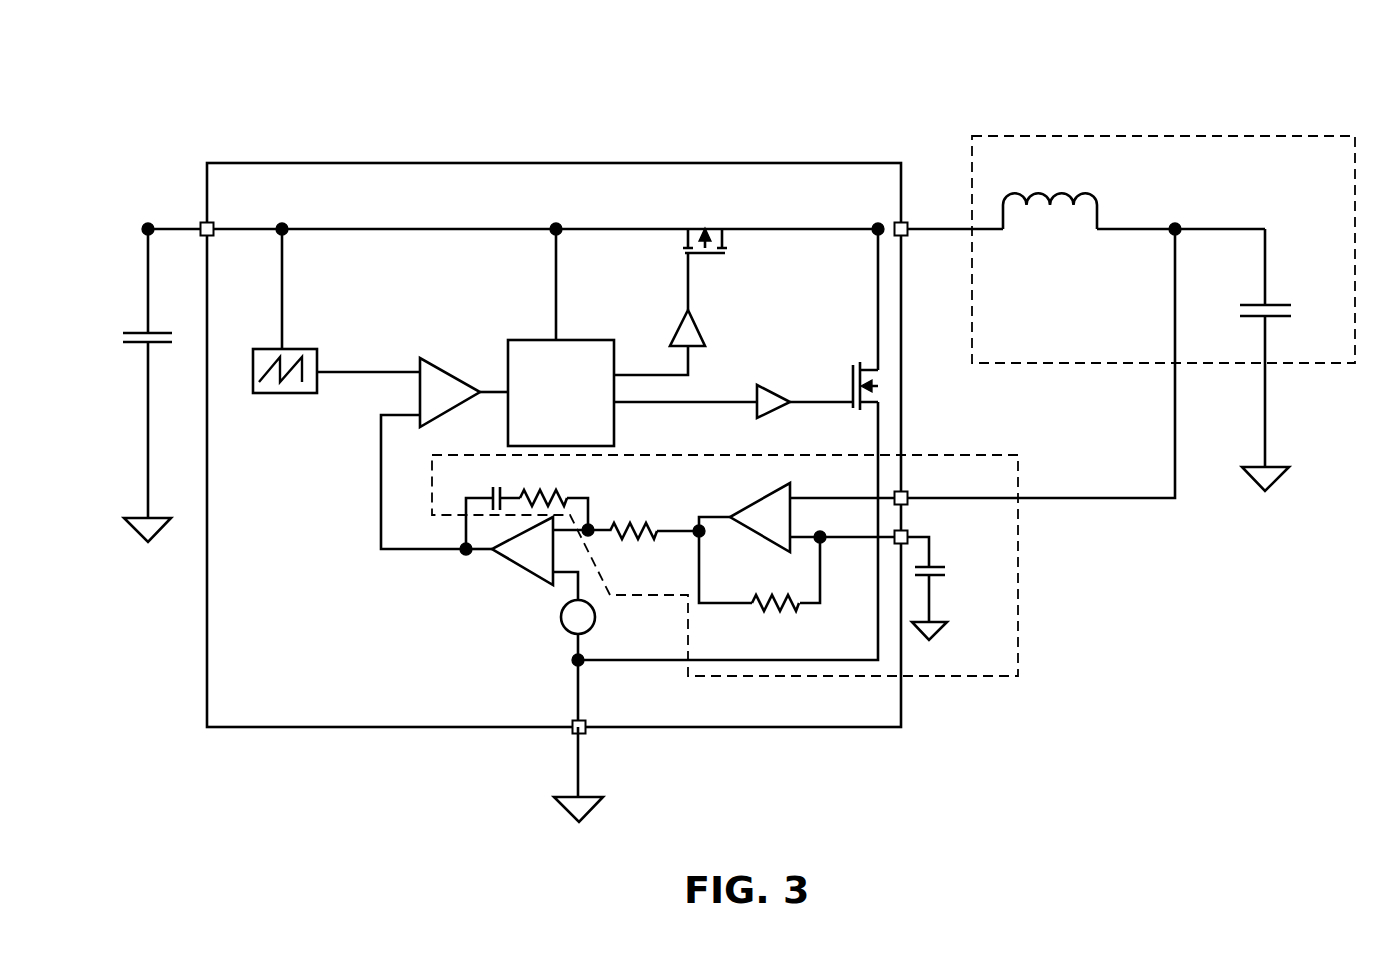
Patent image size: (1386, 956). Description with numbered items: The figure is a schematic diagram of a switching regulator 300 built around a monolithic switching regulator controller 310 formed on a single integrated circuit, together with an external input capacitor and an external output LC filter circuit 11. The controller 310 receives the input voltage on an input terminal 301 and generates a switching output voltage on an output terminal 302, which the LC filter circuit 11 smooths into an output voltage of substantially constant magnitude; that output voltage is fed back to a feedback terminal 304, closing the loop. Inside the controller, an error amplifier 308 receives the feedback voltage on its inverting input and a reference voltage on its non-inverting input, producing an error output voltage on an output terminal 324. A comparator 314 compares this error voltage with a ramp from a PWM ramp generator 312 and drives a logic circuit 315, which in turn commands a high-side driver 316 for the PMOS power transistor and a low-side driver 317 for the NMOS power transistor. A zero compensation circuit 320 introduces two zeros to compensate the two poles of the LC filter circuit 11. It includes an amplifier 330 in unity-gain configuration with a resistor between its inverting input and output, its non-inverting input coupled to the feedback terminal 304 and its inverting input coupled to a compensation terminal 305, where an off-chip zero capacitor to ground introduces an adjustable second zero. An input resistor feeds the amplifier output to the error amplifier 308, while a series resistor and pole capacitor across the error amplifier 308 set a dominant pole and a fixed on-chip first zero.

The switching regulator 300 is at (943, 86).
The output LC filter circuit 11 is at (1248, 136).
The monolithic switching regulator controller 310 is at (833, 163).
The input terminal 301 is at (212, 223).
The output terminal 302 is at (908, 241).
The PWM ramp generator 312 is at (306, 349).
The comparator 314 is at (420, 402).
The logic circuit 315 is at (561, 337).
The high-side driver 316 is at (673, 329).
The low-side driver 317 is at (784, 396).
The zero compensation circuit 320 is at (966, 455).
The feedback terminal 304 is at (910, 491).
The compensation terminal 305 is at (910, 535).
The output terminal 324 is at (466, 556).
The error amplifier 308 is at (538, 577).
The amplifier 330 is at (755, 539).